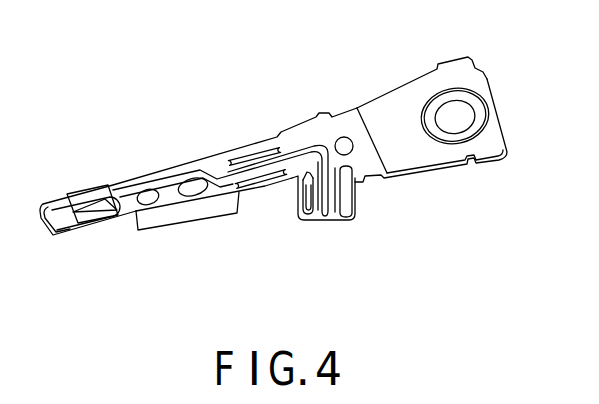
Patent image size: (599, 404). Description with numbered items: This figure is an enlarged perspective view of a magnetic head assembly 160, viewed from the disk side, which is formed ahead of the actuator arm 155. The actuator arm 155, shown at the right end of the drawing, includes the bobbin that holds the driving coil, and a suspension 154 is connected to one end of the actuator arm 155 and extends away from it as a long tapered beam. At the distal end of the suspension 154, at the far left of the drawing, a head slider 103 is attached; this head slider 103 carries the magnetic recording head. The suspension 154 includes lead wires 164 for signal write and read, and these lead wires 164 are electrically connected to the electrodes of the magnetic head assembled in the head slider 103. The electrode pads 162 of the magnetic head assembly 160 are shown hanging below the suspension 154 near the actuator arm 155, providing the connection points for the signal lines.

The magnetic head assembly 160 is at (150, 70).
The suspension 154 is at (213, 162).
The head slider 103 is at (88, 188).
The lead wires 164 is at (170, 207).
The electrode pads 162 is at (338, 216).
The actuator arm 155 is at (437, 152).